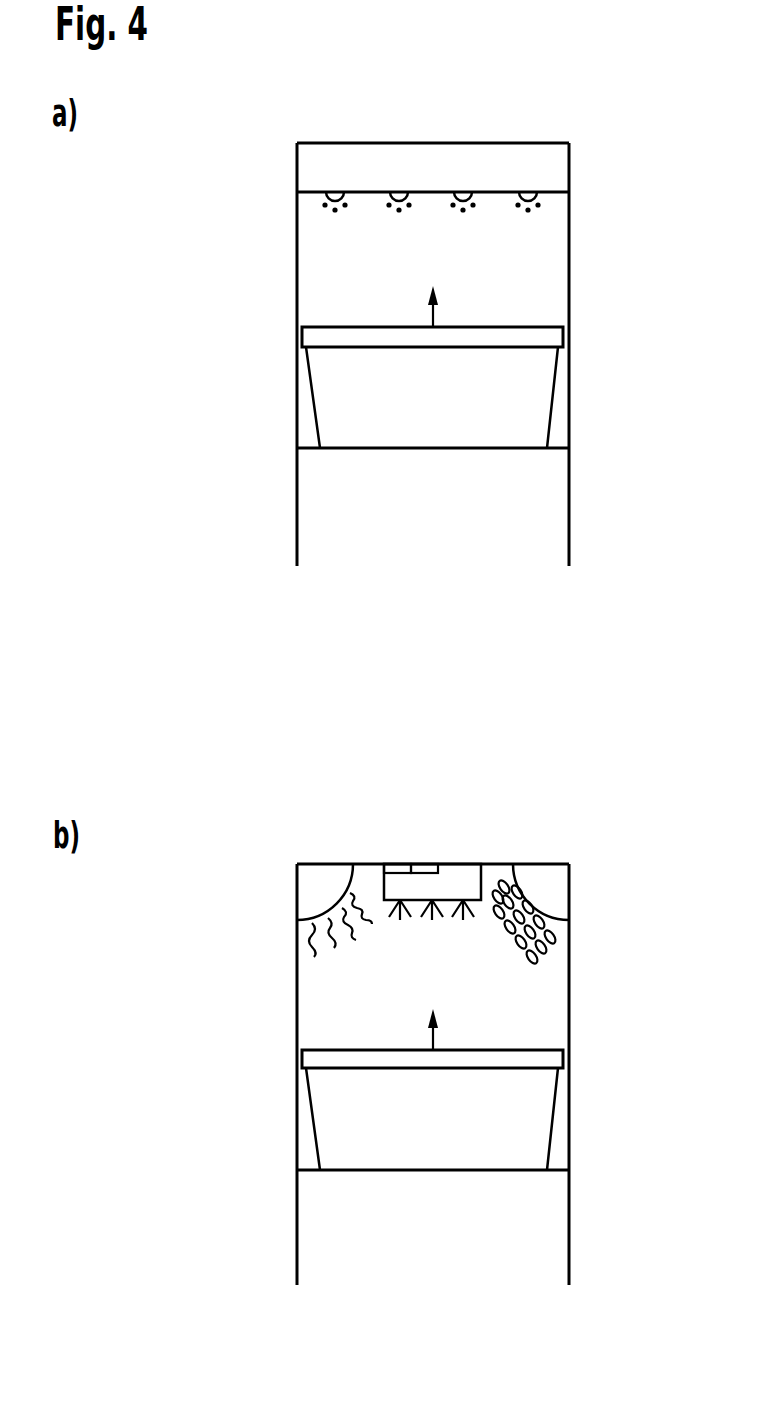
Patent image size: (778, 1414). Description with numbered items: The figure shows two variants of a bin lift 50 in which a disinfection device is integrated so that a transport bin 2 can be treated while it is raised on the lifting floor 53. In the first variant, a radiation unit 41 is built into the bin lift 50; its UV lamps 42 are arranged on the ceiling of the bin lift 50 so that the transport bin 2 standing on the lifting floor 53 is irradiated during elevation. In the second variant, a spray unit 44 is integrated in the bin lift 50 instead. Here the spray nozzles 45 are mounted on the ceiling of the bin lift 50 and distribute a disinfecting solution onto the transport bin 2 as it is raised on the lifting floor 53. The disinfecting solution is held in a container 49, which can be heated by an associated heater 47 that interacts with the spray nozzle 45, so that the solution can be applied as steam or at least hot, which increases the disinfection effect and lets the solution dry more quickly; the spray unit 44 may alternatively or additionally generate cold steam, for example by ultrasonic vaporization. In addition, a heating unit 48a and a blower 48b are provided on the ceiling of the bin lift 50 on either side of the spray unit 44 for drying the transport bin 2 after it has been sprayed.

In FIG. 4a, the transport bin 2 is at (537, 400).
In FIG. 4b, the transport bin 2 is at (535, 1122).
In FIG. 4a, the radiation unit 41 is at (565, 170).
In FIG. 4a, the UV lamps 42 is at (528, 200).
In FIG. 4b, the spray unit 44 is at (457, 878).
In FIG. 4b, the spray nozzles 45 is at (463, 900).
In FIG. 4b, the heater 47 is at (402, 864).
In FIG. 4b, the heating unit 48a is at (303, 892).
In FIG. 4b, the blower 48b is at (565, 890).
In FIG. 4b, the container 49 is at (430, 864).
In FIG. 4a, the bin lift 50 is at (307, 265).
In FIG. 4b, the bin lift 50 is at (303, 988).
In FIG. 4a, the lifting floor 53 is at (525, 448).
In FIG. 4b, the lifting floor 53 is at (525, 1170).